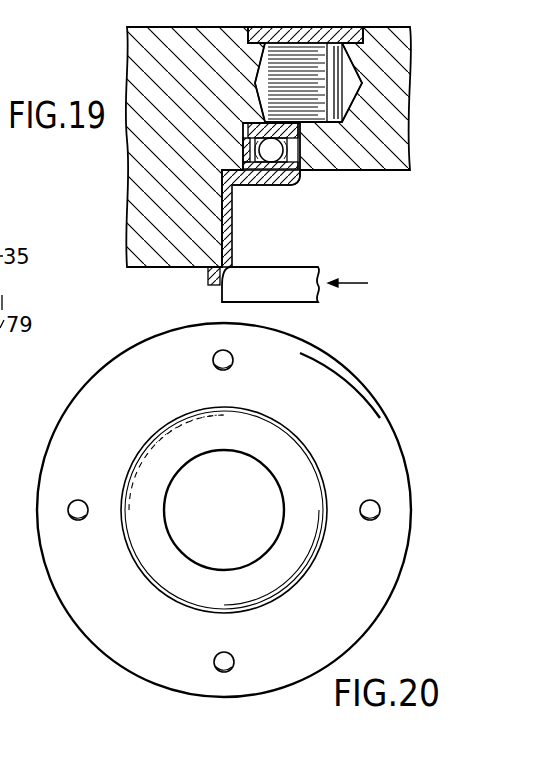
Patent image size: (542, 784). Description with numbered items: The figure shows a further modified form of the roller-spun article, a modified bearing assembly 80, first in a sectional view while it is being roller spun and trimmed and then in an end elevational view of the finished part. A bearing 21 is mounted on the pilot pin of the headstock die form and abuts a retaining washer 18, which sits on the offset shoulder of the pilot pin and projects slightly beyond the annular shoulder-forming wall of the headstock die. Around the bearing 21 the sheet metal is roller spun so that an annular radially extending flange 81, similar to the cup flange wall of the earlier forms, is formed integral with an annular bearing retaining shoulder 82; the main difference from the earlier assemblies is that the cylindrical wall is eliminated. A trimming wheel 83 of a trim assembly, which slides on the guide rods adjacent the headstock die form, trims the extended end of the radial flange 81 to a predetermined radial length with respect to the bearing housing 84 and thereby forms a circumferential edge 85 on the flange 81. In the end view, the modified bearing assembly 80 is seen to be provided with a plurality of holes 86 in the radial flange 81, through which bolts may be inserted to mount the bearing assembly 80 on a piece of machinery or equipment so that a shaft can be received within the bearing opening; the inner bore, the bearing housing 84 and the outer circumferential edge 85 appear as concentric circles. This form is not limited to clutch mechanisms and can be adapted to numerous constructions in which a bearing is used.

In FIG. 19, the retaining washer 18 is at (242, 127).
In FIG. 19, the bearing 21 is at (305, 61).
In FIG. 20, the modified bearing assembly 80 is at (372, 386).
In FIG. 19, the annular radially extending flange 81 is at (227, 224).
In FIG. 20, the annular radially extending flange 81 is at (377, 455).
In FIG. 19, the annular bearing retaining shoulder 82 is at (225, 151).
In FIG. 19, the trimming wheel 83 is at (298, 275).
In FIG. 19, the bearing housing 84 is at (305, 187).
In FIG. 20, the bearing housing 84 is at (257, 422).
In FIG. 19, the circumferential edge 85 is at (222, 289).
In FIG. 20, the circumferential edge 85 is at (343, 368).
In FIG. 20, the holes 86 is at (213, 360).